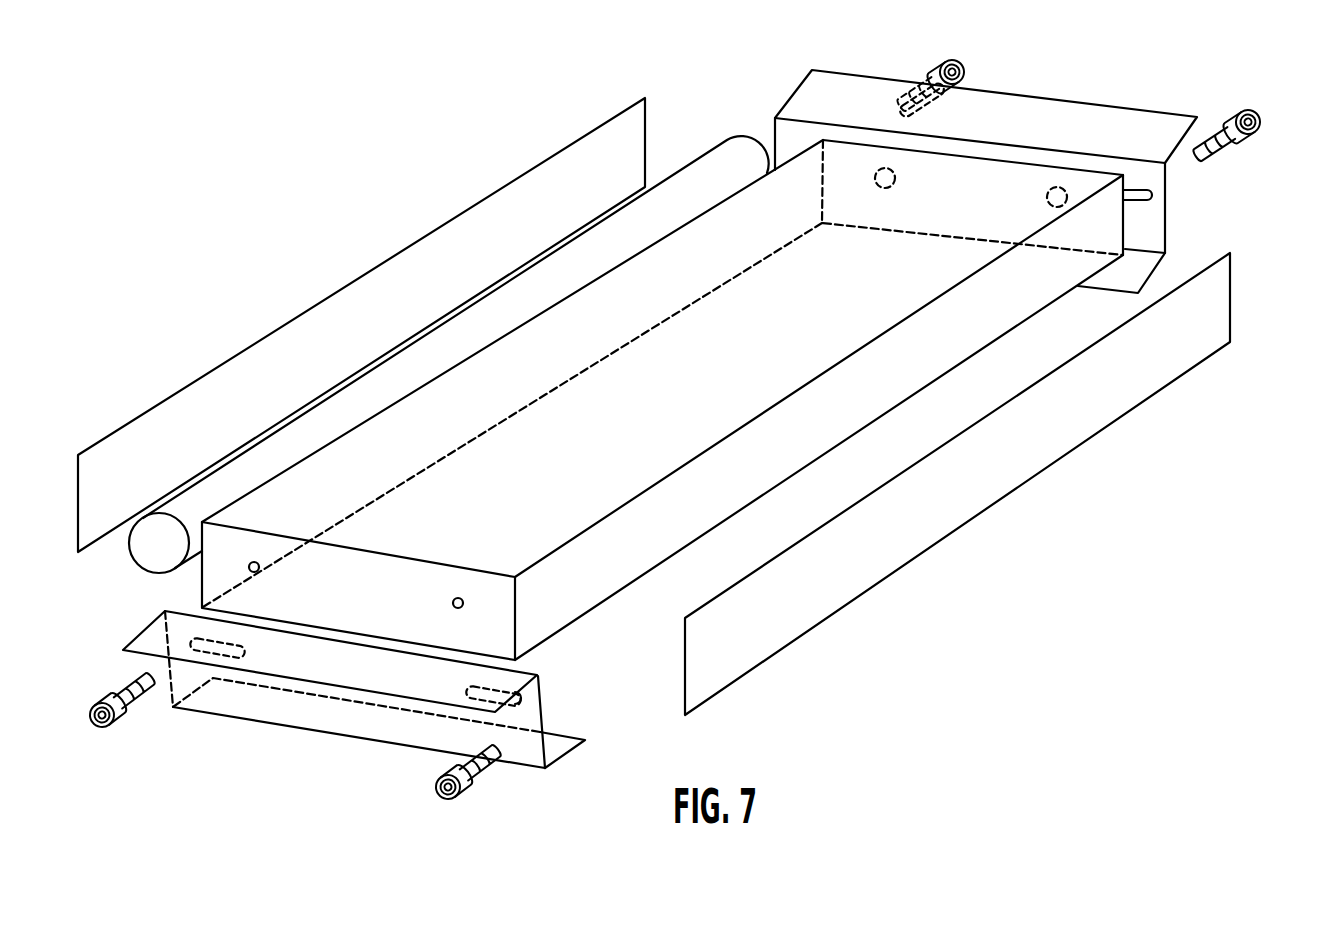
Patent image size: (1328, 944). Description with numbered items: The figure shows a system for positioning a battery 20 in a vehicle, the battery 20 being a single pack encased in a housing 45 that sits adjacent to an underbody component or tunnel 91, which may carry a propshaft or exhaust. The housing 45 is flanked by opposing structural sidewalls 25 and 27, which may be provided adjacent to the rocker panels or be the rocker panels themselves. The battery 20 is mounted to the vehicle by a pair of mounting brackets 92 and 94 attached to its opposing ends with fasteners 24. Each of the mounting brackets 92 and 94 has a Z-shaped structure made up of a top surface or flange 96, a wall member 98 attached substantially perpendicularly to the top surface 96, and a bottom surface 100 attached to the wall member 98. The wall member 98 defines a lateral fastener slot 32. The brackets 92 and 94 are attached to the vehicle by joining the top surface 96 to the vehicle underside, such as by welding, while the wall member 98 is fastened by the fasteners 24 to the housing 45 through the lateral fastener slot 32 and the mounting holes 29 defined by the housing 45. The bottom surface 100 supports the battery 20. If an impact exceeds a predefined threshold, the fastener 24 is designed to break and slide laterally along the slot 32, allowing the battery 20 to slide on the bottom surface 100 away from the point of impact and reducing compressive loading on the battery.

The battery 20 is at (988, 192).
The fasteners 24 is at (480, 777).
The sidewall 25 is at (1215, 307).
The sidewall 27 is at (640, 140).
The mounting holes 29 is at (248, 566).
The lateral fastener slot 32 is at (213, 650).
The housing 45 is at (666, 349).
The underbody tunnel 91 is at (728, 160).
The mounting bracket 92 is at (350, 742).
The mounting bracket 94 is at (1185, 192).
The top surface 96 is at (1112, 145).
The wall member 98 is at (520, 787).
The bottom surface 100 is at (1143, 263).